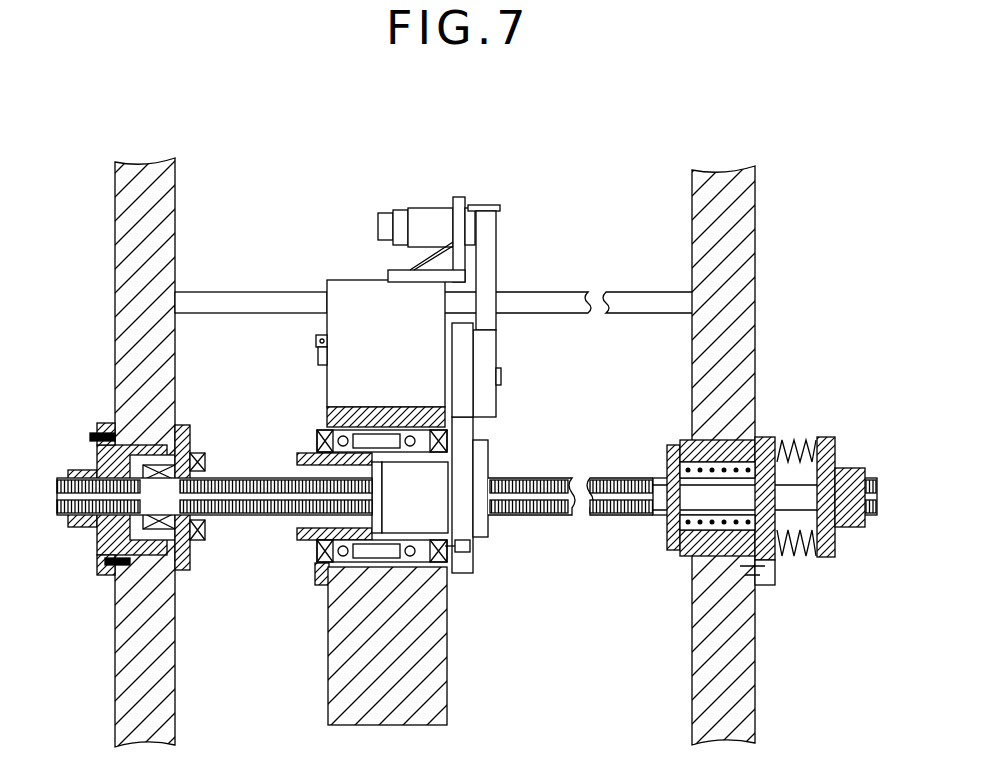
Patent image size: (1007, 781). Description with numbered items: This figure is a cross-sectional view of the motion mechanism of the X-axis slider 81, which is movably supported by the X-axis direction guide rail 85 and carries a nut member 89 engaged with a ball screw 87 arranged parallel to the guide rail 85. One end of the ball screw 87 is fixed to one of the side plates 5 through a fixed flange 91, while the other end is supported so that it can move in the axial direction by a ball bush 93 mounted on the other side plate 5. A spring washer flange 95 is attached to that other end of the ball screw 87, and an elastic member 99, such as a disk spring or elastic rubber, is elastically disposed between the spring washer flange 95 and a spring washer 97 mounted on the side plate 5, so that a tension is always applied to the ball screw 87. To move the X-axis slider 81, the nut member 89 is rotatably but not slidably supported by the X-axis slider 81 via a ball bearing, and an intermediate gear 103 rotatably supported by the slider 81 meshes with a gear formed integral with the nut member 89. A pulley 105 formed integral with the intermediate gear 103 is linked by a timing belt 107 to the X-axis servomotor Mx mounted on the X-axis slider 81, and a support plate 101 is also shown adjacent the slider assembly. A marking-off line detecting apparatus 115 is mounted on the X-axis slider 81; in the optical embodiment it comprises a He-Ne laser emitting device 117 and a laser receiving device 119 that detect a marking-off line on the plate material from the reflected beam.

The side plate 5 is at (116, 258).
The X-axis slider 81 is at (327, 385).
The X-axis direction guide rail 85 is at (573, 294).
The ball screw 87 is at (547, 513).
The nut member 89 is at (432, 506).
The fixed flange 91 is at (96, 548).
The ball bush 93 is at (722, 450).
The spring washer flange 95 is at (830, 440).
The spring washer 97 is at (772, 582).
The elastic member 99 is at (797, 560).
The support plate 101 is at (468, 440).
The intermediate gear 103 is at (458, 357).
The pulley 105 is at (498, 357).
The timing belt 107 is at (490, 275).
The marking-off line detecting apparatus 115 is at (296, 345).
The He-Ne laser emitting device 117 is at (266, 304).
The laser receiving device 119 is at (316, 336).
The X-axis servomotor Mx is at (437, 210).